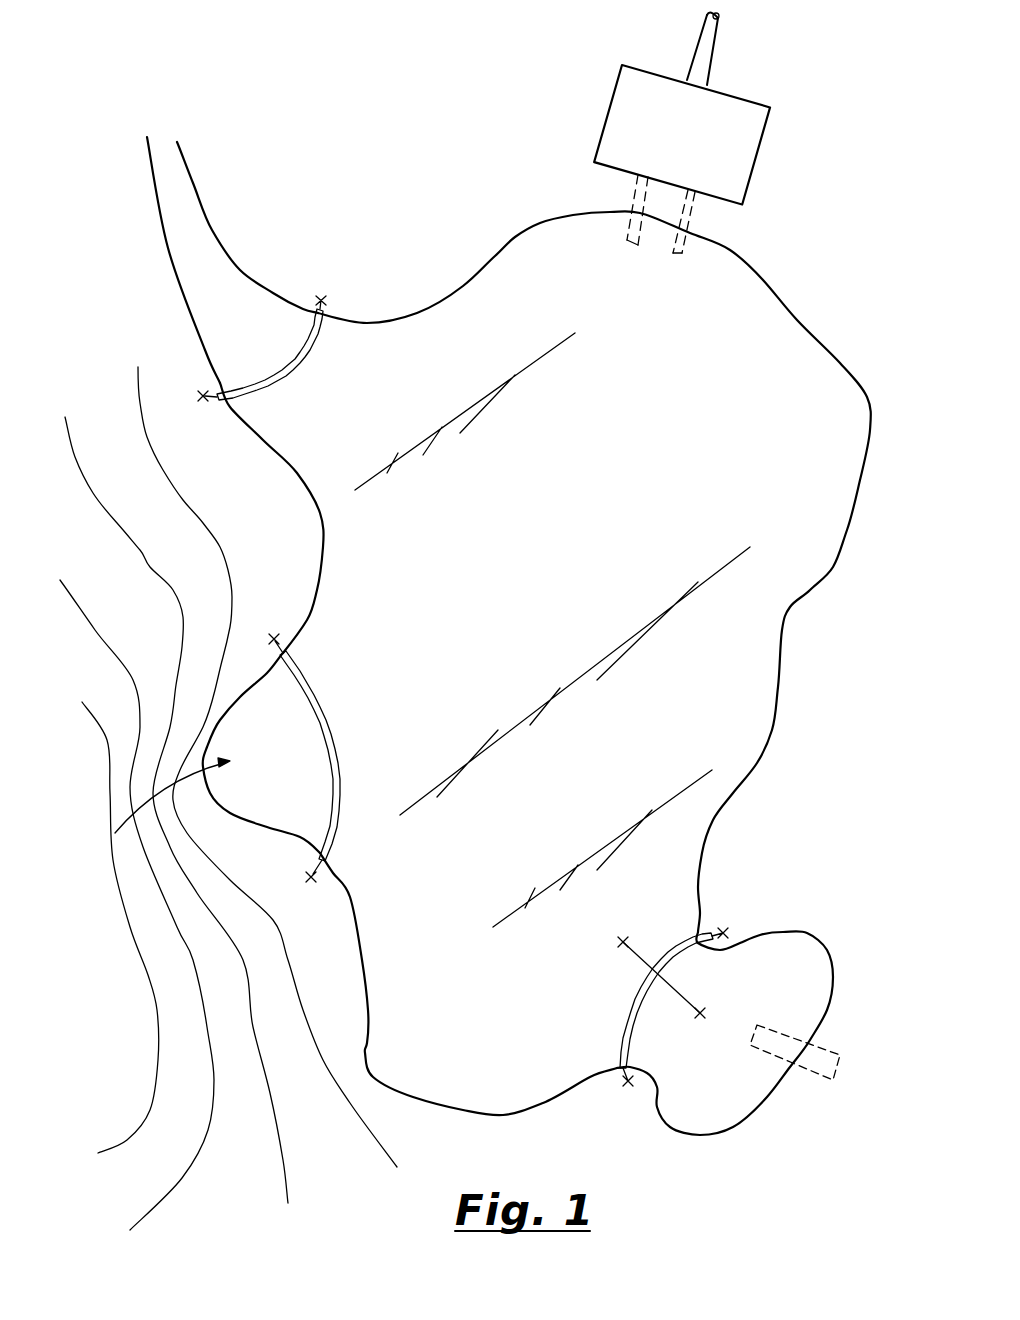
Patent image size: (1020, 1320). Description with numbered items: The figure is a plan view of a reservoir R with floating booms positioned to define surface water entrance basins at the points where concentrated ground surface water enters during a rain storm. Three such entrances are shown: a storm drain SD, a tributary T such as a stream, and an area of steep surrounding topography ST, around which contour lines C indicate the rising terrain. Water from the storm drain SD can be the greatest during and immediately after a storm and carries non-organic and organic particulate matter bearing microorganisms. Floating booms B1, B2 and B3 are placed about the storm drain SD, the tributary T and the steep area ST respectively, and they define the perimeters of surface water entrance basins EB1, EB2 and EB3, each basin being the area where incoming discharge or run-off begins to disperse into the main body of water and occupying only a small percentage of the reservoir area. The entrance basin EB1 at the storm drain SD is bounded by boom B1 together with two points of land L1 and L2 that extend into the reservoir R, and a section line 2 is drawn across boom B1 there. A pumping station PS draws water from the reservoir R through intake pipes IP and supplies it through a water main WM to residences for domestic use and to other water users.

The reservoir R is at (554, 592).
The tributary T is at (168, 188).
The surface water entrance basin EB2 is at (258, 345).
The floating boom B2 is at (300, 358).
The surface water entrance basin EB3 is at (286, 777).
The floating boom B3 is at (330, 728).
The area of steep surrounding topography ST is at (130, 813).
The contour lines C is at (152, 991).
The pumping station PS is at (745, 172).
The water main WM is at (710, 43).
The intake pipe IP is at (623, 240).
The surface water entrance basin EB1 is at (728, 1062).
The floating boom B1 is at (622, 1027).
The point of land L1 is at (637, 1067).
The point of land L2 is at (722, 942).
The section line 2- 2 is at (623, 942).
The storm drain SD is at (812, 1048).